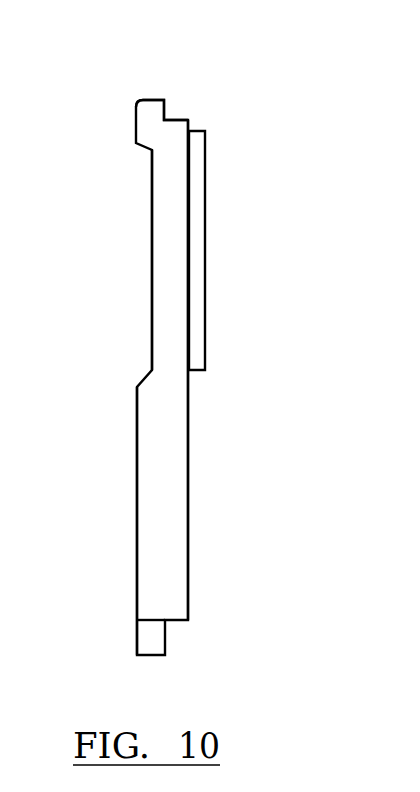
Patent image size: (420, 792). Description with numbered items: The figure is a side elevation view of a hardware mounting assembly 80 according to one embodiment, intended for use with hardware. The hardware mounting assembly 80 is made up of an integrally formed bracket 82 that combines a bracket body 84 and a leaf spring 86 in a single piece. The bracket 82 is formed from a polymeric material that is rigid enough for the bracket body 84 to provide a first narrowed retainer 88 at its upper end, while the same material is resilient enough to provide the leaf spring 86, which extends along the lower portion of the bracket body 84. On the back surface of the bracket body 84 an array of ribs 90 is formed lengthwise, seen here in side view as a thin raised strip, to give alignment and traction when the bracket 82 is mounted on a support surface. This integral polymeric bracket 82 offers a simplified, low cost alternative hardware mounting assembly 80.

The hardware mounting assembly 80 is at (206, 66).
The bracket 82 is at (140, 290).
The bracket body 84 is at (175, 253).
The leaf spring 86 is at (175, 518).
The first narrowed retainer 88 is at (152, 98).
The array of ribs 90 is at (193, 185).